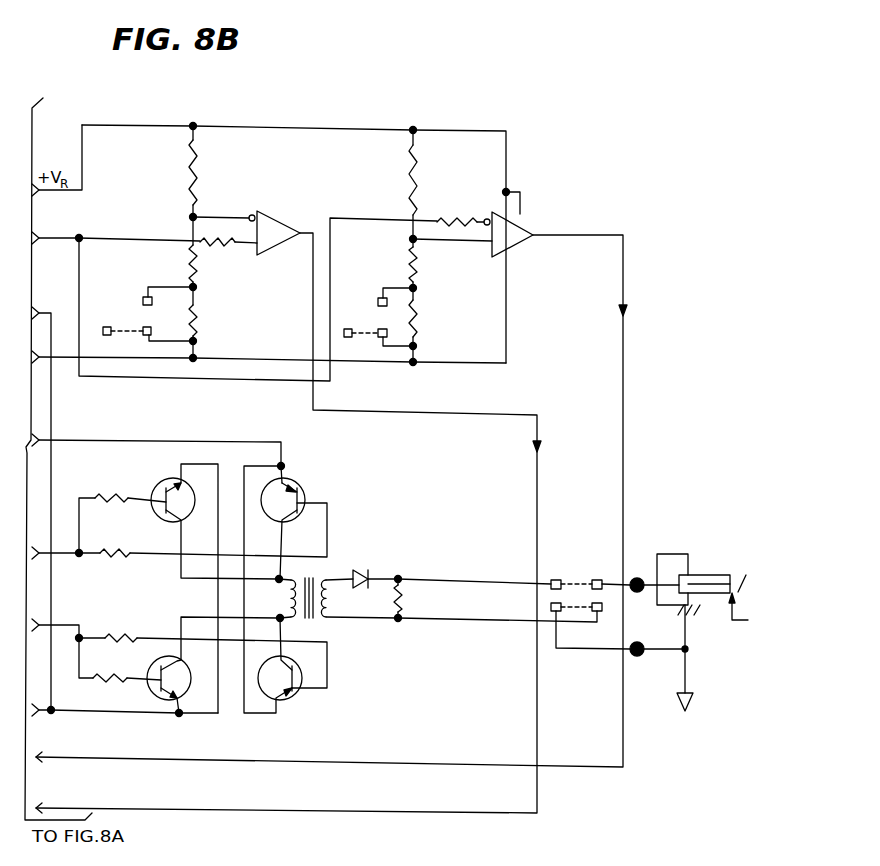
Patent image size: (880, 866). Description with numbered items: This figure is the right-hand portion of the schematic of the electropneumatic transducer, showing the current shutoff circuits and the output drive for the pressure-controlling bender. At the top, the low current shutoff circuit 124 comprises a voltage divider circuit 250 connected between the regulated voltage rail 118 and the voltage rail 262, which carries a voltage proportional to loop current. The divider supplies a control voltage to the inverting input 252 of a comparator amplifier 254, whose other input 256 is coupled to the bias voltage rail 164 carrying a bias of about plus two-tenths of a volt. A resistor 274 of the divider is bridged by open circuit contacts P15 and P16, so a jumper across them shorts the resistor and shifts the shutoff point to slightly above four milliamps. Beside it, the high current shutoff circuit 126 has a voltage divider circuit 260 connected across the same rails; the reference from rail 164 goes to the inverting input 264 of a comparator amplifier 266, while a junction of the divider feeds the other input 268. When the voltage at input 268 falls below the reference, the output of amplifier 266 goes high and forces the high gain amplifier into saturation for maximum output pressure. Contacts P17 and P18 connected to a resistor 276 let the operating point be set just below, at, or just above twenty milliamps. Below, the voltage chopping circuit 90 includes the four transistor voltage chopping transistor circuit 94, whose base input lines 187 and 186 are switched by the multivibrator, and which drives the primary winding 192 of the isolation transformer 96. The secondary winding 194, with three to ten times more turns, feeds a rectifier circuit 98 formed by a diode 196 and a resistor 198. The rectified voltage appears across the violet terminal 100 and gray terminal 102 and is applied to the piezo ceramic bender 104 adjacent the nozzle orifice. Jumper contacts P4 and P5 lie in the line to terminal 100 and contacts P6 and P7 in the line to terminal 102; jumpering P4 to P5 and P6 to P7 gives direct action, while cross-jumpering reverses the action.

The regulated voltage rail 118 is at (128, 124).
The low current shutoff circuit 124 is at (258, 289).
The bias voltage rail 164 is at (47, 236).
The voltage divider circuit 250 is at (210, 183).
The inverting input 252 is at (238, 216).
The comparator amplifier 254 is at (268, 246).
The input of comparator amplifier 256 is at (245, 247).
The resistor 274 is at (200, 317).
The voltage rail 262 is at (162, 358).
The voltage divider circuit 260 is at (426, 182).
The inverting input 264 is at (482, 215).
The comparator amplifier 266 is at (520, 230).
The input of comparator amplifier 268 is at (483, 241).
The high current shutoff circuit 126 is at (452, 286).
The resistor 276 is at (422, 317).
The voltage chopping circuit 90 is at (172, 576).
The base input line 187 is at (62, 556).
The voltage chopping transistor circuit 94 is at (170, 652).
The base input line 186 is at (80, 624).
The isolation transformer 96 is at (335, 632).
The primary winding 192 is at (286, 594).
The secondary winding 194 is at (332, 600).
The diode 196 is at (367, 572).
The rectifier circuit 98 is at (392, 570).
The resistor 198 is at (407, 603).
The violet terminal 100 is at (637, 578).
The gray terminal 102 is at (637, 657).
The piezo ceramic bender 104 is at (757, 526).
The jumper contact P4 is at (563, 579).
The jumper contact P5 is at (605, 579).
The jumper contact P6 is at (550, 606).
The jumper contact P7 is at (605, 610).
The open circuit contact P15 is at (143, 300).
The open circuit contact P16 is at (143, 328).
The open circuit contact P17 is at (378, 301).
The open circuit contact P18 is at (379, 329).